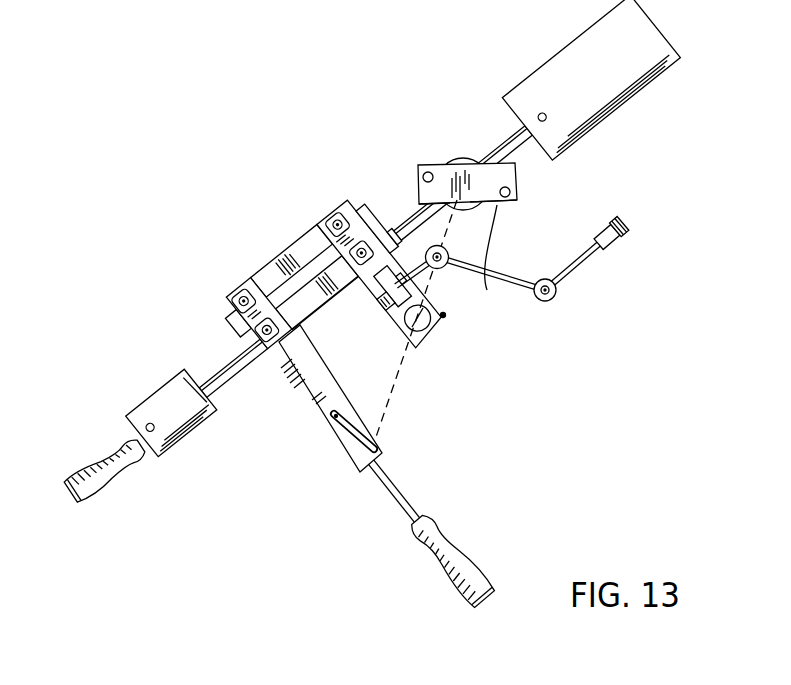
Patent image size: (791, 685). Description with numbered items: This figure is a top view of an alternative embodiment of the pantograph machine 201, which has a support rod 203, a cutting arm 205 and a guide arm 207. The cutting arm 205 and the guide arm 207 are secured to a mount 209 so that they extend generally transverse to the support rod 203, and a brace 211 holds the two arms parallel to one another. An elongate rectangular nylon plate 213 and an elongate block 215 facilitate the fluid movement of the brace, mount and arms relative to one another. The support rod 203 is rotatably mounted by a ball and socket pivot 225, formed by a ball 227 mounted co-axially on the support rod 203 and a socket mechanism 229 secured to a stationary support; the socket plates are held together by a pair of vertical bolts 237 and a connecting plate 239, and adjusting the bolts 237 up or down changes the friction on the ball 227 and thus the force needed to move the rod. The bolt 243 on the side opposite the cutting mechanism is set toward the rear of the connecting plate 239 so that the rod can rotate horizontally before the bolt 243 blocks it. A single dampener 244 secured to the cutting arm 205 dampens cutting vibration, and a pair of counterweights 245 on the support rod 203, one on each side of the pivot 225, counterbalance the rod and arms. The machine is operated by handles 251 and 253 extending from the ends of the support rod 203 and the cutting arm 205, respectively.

The pantograph machine 201 is at (222, 214).
The support rod 203 is at (494, 145).
The cutting arm 205 is at (443, 316).
The guide arm 207 is at (325, 418).
The mount 209 is at (310, 287).
The brace 211 is at (262, 270).
The elongate rectangular nylon plate 213 is at (325, 312).
The elongate block 215 is at (233, 335).
The ball and socket pivot 225 is at (540, 185).
The ball 227 is at (461, 158).
The socket mechanism 229 is at (533, 199).
The vertical bolts 237 is at (422, 172).
The connecting plate 239 is at (487, 290).
The bolt 243 is at (418, 205).
The dampener 244 is at (602, 276).
The counterweights 245 is at (163, 457).
The handle 251 is at (83, 493).
The handle 253 is at (465, 552).